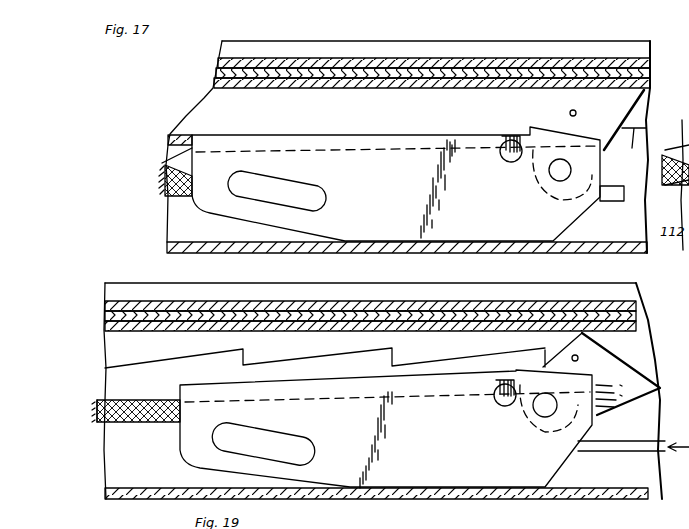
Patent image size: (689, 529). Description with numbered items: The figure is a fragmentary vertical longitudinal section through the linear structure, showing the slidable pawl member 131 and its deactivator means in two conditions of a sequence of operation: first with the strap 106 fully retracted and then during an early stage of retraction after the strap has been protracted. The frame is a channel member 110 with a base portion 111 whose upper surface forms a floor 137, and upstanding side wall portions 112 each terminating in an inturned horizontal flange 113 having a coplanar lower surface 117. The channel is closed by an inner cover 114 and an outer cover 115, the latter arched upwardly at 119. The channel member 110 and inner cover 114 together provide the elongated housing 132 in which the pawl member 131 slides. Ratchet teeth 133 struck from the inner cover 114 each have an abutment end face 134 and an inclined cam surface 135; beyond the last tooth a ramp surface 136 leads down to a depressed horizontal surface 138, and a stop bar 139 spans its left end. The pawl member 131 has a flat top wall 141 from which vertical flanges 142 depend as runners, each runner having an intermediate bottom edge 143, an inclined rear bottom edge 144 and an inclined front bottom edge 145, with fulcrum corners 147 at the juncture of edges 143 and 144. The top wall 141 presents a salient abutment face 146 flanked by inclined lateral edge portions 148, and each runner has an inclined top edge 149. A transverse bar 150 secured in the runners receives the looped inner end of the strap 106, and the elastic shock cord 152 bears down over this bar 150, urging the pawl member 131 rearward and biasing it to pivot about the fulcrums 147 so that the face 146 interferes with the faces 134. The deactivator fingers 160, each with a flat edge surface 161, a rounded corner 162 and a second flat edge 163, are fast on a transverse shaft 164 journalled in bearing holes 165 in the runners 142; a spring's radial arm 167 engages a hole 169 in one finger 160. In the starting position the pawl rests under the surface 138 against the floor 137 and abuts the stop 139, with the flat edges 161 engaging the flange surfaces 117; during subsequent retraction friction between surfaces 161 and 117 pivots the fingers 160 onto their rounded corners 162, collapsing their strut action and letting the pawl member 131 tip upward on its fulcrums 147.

In FIG. 17, the strap 106 is at (610, 201).
In FIG. 19, the strap 106 is at (624, 452).
In FIG. 17, the channel member 110 is at (402, 259).
In FIG. 19, the channel member 110 is at (454, 507).
In FIG. 17, the base portion 111 is at (168, 247).
In FIG. 19, the base portion 111 is at (522, 496).
In FIG. 17, the side wall portions 112 is at (165, 235).
In FIG. 19, the side wall portions 112 is at (112, 485).
In FIG. 17, the horizontal flange 113 is at (340, 80).
In FIG. 19, the horizontal flange 113 is at (160, 326).
In FIG. 17, the inner cover 114 is at (404, 72).
In FIG. 19, the inner cover 114 is at (265, 324).
In FIG. 17, the outer cover 115 is at (457, 58).
In FIG. 19, the outer cover 115 is at (280, 301).
In FIG. 17, the lower surfaces 117 is at (252, 89).
In FIG. 19, the lower surfaces 117 is at (198, 328).
In FIG. 17, the arched portion 119 is at (328, 44).
In FIG. 19, the arched portion 119 is at (490, 276).
In FIG. 17, the pawl member 131 is at (609, 168).
In FIG. 19, the pawl member 131 is at (563, 473).
In FIG. 17, the elongated housing 132 is at (186, 240).
In FIG. 19, the elongated housing 132 is at (172, 490).
In FIG. 19, the ratchet teeth 133 is at (330, 361).
In FIG. 19, the abutment end face 134 is at (248, 360).
In FIG. 19, the inclined cam surface 135 is at (367, 361).
In FIG. 17, the ramp surface 136 is at (629, 149).
In FIG. 17, the floor 137 is at (228, 240).
In FIG. 19, the floor 137 is at (163, 486).
In FIG. 17, the depressed horizontal surface 138 is at (298, 135).
In FIG. 17, the stop bar 139 is at (167, 140).
In FIG. 17, the top wall portion 141 is at (450, 118).
In FIG. 19, the top wall portion 141 is at (425, 378).
In FIG. 17, the vertical flanges 142 is at (396, 184).
In FIG. 19, the vertical flanges 142 is at (386, 429).
In FIG. 17, the intermediate bottom edge portion 143 is at (450, 248).
In FIG. 19, the intermediate bottom edge portion 143 is at (505, 485).
In FIG. 17, the rear bottom edge portion 144 is at (240, 216).
In FIG. 19, the rear bottom edge portion 144 is at (226, 468).
In FIG. 17, the front bottom edge portion 145 is at (572, 236).
In FIG. 19, the front bottom edge portion 145 is at (553, 487).
In FIG. 17, the abutment face 146 is at (558, 160).
In FIG. 19, the abutment face 146 is at (547, 396).
In FIG. 17, the fulcrum corners 147 is at (350, 238).
In FIG. 19, the fulcrum corners 147 is at (345, 487).
In FIG. 17, the inclined lateral edge portions 148 is at (511, 140).
In FIG. 19, the inclined lateral edge portions 148 is at (505, 384).
In FIG. 17, the inclined top edge 149 is at (532, 128).
In FIG. 19, the inclined top edge 149 is at (525, 356).
In FIG. 17, the transverse bar 150 is at (310, 187).
In FIG. 19, the transverse bar 150 is at (305, 442).
In FIG. 17, the elastic shock cord 152 is at (162, 163).
In FIG. 19, the elastic shock cord 152 is at (136, 422).
In FIG. 17, the deactivator fingers 160 is at (640, 100).
In FIG. 19, the deactivator fingers 160 is at (632, 395).
In FIG. 17, the flat edge surface 161 is at (638, 82).
In FIG. 19, the flat edge surface 161 is at (600, 348).
In FIG. 17, the rounded corner edge surface 162 is at (548, 88).
In FIG. 19, the rounded corner edge surface 162 is at (582, 333).
In FIG. 17, the second flat edge surface 163 is at (538, 112).
In FIG. 19, the second flat edge surface 163 is at (545, 348).
In FIG. 17, the transverse shaft 164 is at (562, 181).
In FIG. 19, the transverse shaft 164 is at (547, 418).
In FIG. 17, the bearing holes 165 is at (552, 173).
In FIG. 19, the bearing holes 165 is at (538, 410).
In FIG. 17, the radial arm 167 is at (577, 113).
In FIG. 19, the radial arm 167 is at (580, 348).
In FIG. 17, the hole 169 is at (577, 115).
In FIG. 19, the hole 169 is at (579, 362).